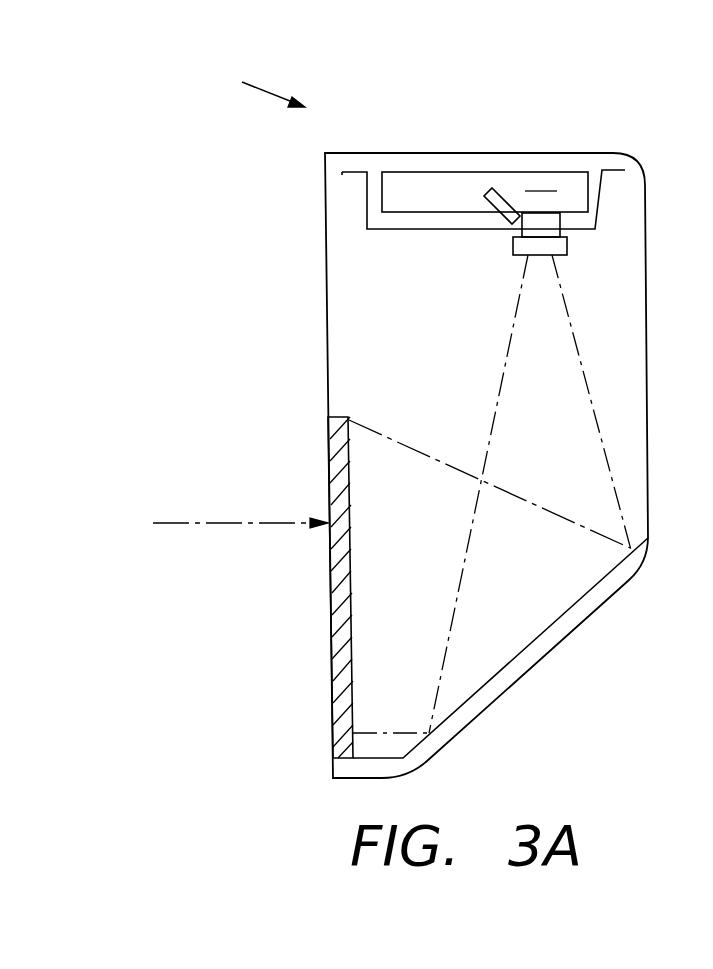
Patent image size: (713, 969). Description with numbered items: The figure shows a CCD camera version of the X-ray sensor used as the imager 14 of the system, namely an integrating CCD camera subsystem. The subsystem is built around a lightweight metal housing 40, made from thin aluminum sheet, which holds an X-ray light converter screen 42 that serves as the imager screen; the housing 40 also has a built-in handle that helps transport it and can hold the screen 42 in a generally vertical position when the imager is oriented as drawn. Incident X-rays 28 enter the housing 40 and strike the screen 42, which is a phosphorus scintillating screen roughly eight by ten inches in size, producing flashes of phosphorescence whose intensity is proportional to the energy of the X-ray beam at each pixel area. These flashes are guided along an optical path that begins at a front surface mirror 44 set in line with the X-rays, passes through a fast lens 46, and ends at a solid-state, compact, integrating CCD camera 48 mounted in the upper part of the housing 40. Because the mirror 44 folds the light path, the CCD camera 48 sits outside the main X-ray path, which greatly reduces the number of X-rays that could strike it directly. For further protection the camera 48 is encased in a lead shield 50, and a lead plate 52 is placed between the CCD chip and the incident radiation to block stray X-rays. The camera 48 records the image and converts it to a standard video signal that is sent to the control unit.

The imager 14 is at (255, 89).
The incoming light 28 is at (228, 523).
The lightweight metal housing 40 is at (648, 322).
The X-ray light converter screen 42 is at (330, 597).
The front surface mirror 44 is at (595, 585).
The fast lens 46 is at (515, 243).
The CCD camera 48 is at (432, 212).
The lead shield 50 is at (602, 200).
The lead plate 52 is at (492, 195).